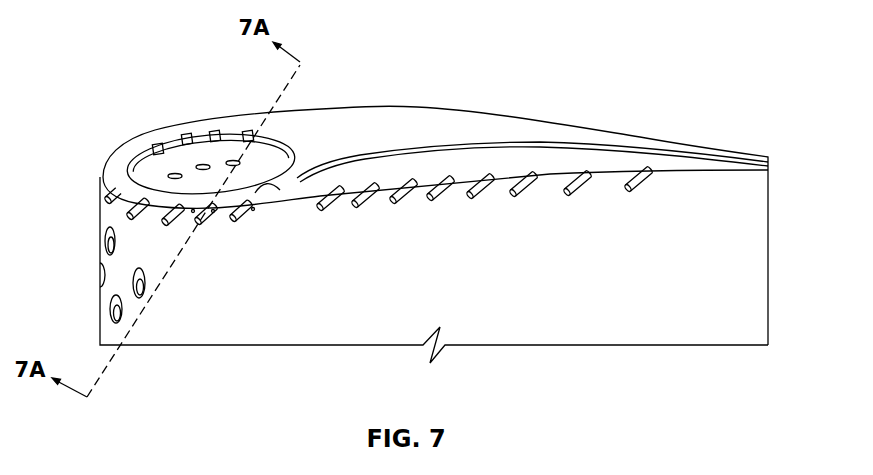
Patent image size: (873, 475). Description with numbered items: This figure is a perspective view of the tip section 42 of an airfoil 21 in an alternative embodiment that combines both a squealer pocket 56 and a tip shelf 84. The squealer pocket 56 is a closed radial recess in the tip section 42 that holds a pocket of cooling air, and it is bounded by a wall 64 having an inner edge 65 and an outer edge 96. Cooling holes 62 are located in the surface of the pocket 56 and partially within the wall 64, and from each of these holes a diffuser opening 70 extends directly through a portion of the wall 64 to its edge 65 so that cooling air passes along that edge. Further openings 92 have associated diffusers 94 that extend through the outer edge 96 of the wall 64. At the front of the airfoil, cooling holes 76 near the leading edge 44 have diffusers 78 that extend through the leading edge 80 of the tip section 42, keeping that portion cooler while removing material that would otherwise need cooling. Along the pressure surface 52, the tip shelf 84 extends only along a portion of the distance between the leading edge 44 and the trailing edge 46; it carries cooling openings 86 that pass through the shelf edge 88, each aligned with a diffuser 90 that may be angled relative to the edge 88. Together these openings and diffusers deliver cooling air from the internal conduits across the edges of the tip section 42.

The airfoil 21 is at (91, 136).
The tip section 42 is at (423, 101).
The leading edge 44 is at (100, 300).
The trailing edge 46 is at (770, 272).
The pressure surface 52 is at (493, 311).
The squealer pocket 56 is at (278, 160).
The cooling holes 62 is at (128, 173).
The wall 64 is at (212, 190).
The edge 65 is at (232, 133).
The diffuser opening 70 is at (184, 134).
The cooling holes 76 is at (103, 200).
The diffusers 78 is at (105, 172).
The leading edge of tip section 80 is at (100, 185).
The tip shelf 84 is at (504, 143).
The cooling openings 86 is at (473, 194).
The edge of tip shelf 88 is at (677, 168).
The diffusers 90 is at (580, 170).
The openings 92 is at (165, 224).
The diffusers 94 is at (193, 210).
The outer edge of wall 96 is at (213, 212).